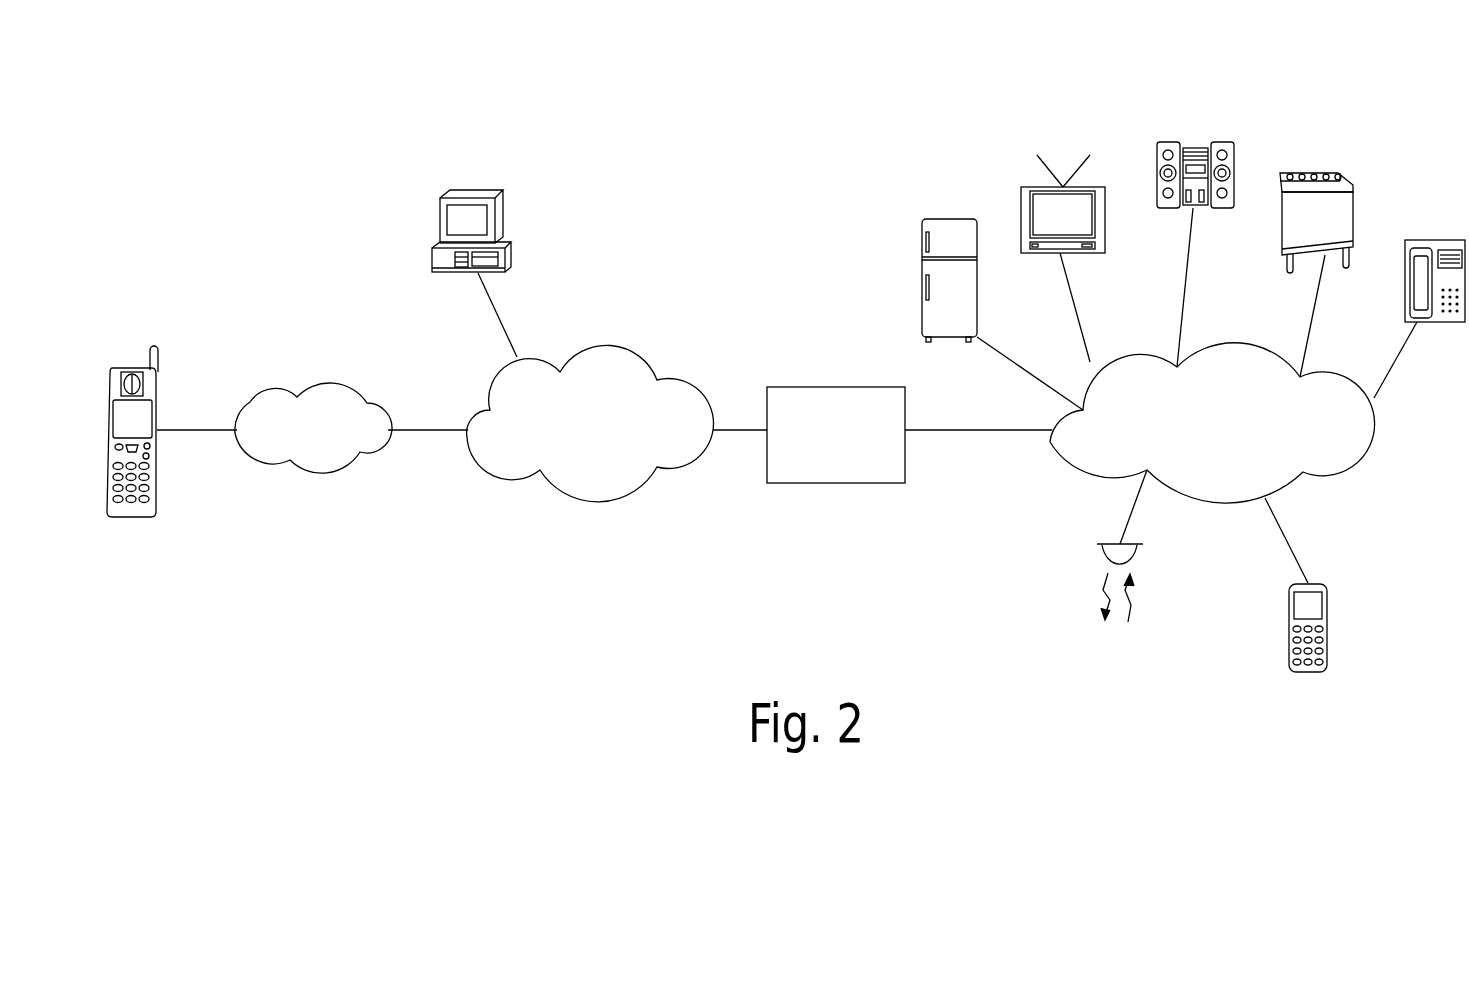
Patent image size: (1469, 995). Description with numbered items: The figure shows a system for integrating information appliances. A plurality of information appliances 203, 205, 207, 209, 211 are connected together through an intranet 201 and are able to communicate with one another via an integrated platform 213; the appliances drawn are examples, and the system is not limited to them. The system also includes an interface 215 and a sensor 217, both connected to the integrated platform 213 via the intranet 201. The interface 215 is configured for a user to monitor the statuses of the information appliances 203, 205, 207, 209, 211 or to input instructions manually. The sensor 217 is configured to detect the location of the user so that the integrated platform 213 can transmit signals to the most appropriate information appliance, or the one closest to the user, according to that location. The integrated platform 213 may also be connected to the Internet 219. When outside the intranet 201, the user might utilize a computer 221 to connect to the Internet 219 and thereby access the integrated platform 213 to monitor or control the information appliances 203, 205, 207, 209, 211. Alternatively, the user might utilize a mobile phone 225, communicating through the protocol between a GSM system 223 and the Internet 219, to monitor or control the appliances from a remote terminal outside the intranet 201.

The intranet 201 is at (1310, 475).
The information appliance 203 is at (948, 219).
The information appliance 205 is at (1030, 187).
The information appliance 207 is at (1170, 142).
The information appliance 209 is at (1315, 172).
The information appliance 211 is at (1425, 240).
The integrated platform 213 is at (812, 484).
The interface 215 is at (1328, 600).
The sensor 217 is at (1086, 572).
The Internet 219 is at (513, 501).
The computer 221 is at (478, 196).
The GSM system 223 is at (312, 476).
The mobile phone 225 is at (131, 369).